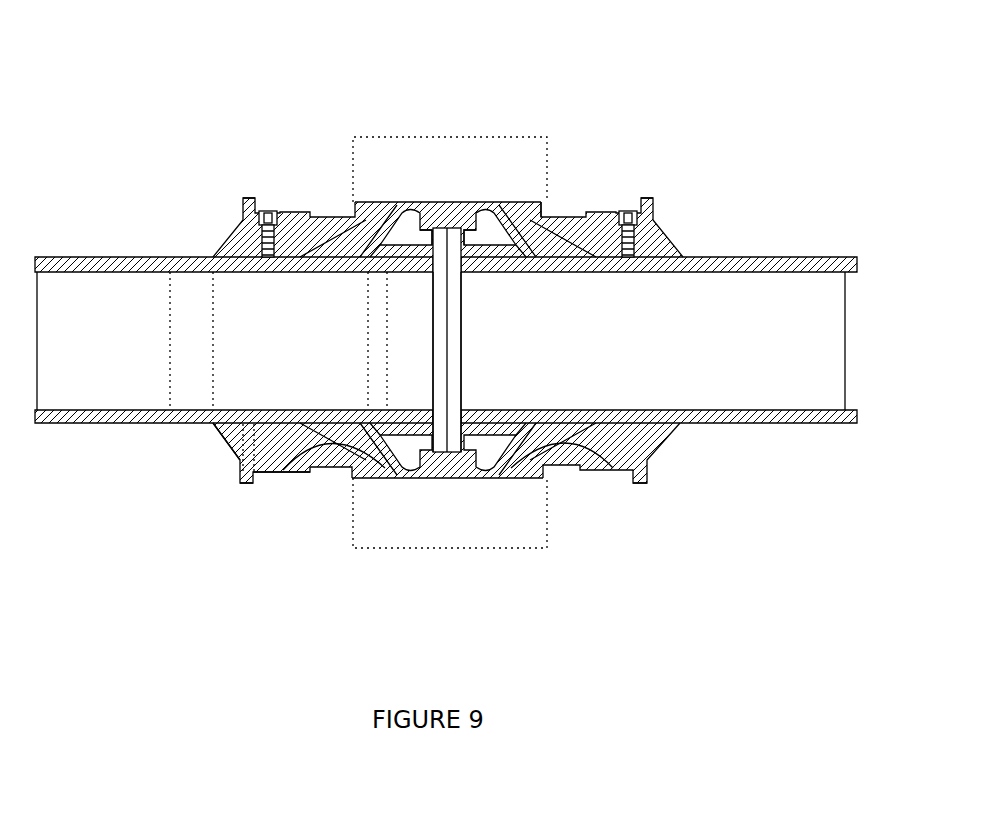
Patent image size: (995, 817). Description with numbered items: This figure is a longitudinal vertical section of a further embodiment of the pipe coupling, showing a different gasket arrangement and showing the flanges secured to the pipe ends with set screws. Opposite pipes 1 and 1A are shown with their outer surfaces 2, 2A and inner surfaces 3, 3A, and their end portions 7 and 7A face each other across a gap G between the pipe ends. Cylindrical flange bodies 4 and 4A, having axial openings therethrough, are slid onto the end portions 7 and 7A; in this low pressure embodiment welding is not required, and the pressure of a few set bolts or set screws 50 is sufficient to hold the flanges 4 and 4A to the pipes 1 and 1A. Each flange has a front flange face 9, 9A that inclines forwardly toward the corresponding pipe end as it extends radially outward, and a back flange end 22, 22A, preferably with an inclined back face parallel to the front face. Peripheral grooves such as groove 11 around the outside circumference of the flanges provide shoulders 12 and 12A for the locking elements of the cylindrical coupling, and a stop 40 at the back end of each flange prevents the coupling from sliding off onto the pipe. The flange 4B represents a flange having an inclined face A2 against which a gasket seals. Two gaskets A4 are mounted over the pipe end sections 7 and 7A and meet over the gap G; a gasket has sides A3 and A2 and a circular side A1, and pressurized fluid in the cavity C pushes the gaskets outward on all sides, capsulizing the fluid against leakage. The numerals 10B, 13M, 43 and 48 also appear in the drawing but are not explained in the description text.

The pipe 1 is at (38, 410).
The pipe 1A is at (742, 410).
The outer surface 2 is at (37, 257).
The outer surface 2A is at (810, 258).
The inner surface 3 is at (45, 272).
The inner surface 3A is at (817, 275).
The cylindrical flange body 4 is at (288, 445).
The cylindrical flange body 4A is at (580, 478).
The flange 4B is at (232, 452).
The pipe end portion 7 is at (408, 275).
The pipe end portion 7A is at (494, 410).
The front flange face 9 is at (287, 473).
The front flange face 9A is at (537, 203).
The clamp ring 10B is at (298, 212).
The peripheral groove 11 is at (330, 217).
The shoulder 12 is at (272, 273).
The shoulder 12A is at (565, 210).
The sealing module 13M is at (417, 137).
The back flange end 22 is at (232, 252).
The back flange end 22A is at (662, 445).
The stop 40 is at (248, 198).
The gasket 43 is at (308, 472).
The blade 48 is at (452, 298).
The set screw 50 is at (268, 211).
The circular gasket side A1 is at (438, 203).
The inclined face A2 is at (453, 203).
The gasket side A3 is at (430, 275).
The gasket A4 is at (398, 480).
The cavity C is at (453, 412).
The gap G is at (435, 356).